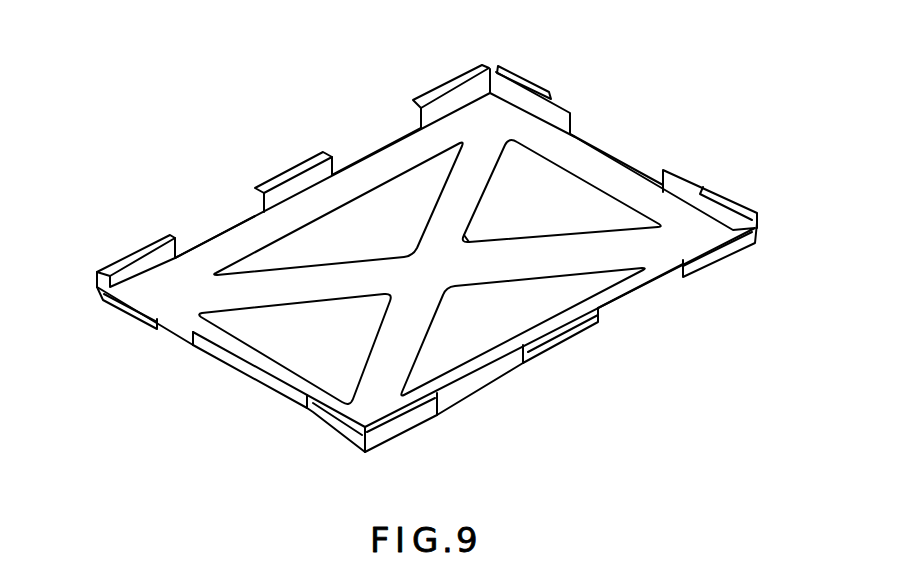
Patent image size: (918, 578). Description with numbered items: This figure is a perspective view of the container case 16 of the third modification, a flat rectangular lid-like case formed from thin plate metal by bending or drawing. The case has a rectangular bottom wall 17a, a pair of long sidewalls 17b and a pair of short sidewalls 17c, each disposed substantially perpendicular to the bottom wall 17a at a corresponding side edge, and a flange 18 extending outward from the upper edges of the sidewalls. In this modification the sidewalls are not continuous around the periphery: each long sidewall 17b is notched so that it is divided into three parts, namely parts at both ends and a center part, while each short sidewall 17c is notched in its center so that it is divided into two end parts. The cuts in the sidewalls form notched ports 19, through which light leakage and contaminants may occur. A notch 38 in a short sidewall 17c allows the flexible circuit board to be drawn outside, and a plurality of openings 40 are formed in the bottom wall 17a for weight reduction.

The container case 16 is at (537, 380).
The bottom wall 17a is at (460, 206).
The long sidewall 17b is at (468, 90).
The short sidewall 17c is at (555, 102).
The flange 18 is at (432, 88).
The notched port 19 is at (598, 117).
The notch 38 is at (183, 340).
The opening 40 is at (366, 200).